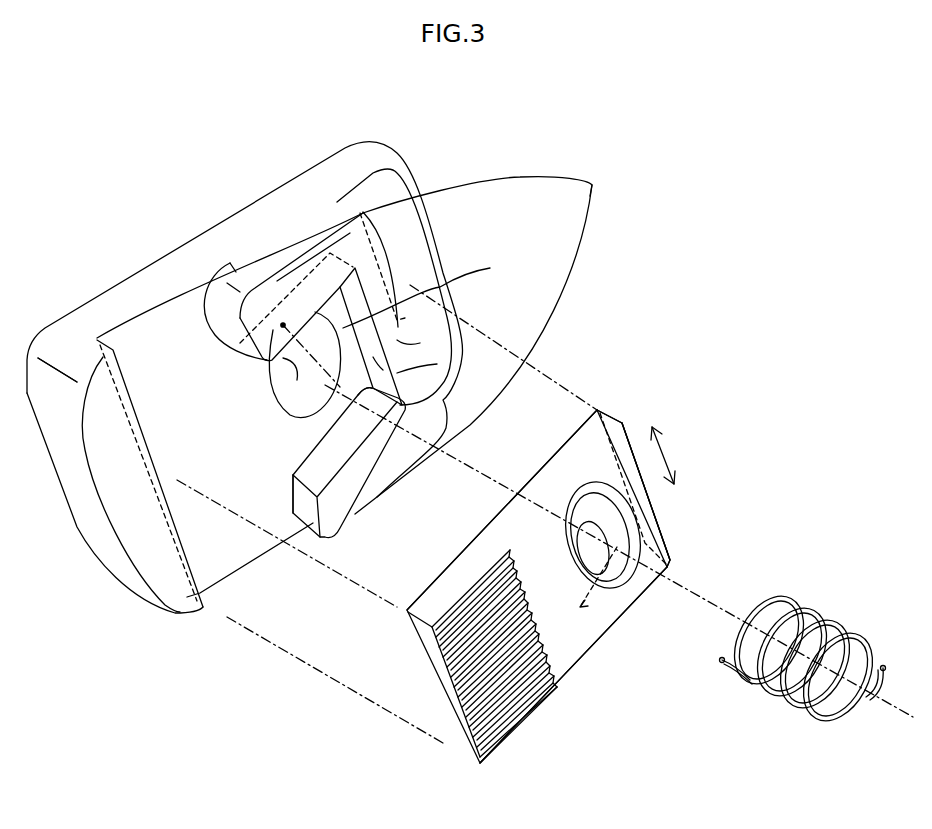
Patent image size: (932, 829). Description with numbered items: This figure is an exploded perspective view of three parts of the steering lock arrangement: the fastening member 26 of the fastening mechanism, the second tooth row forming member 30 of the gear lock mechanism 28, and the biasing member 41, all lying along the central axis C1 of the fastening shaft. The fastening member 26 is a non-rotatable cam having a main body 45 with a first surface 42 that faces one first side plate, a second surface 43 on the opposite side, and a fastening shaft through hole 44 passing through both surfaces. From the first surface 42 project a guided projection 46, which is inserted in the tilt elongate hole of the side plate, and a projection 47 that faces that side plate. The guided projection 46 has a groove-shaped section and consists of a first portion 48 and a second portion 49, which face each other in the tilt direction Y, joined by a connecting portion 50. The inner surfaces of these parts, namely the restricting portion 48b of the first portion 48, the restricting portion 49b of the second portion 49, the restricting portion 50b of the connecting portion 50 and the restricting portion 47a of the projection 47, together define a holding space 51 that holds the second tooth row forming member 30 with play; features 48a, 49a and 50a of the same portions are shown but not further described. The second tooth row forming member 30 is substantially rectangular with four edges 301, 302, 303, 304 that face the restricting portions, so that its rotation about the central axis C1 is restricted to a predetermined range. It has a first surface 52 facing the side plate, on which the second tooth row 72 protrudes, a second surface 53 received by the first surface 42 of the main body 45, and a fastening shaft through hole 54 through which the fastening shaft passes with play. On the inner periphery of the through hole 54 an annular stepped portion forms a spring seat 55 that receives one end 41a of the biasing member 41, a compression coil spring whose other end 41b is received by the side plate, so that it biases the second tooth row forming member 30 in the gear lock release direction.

The fastening member 26 is at (393, 152).
The gear lock mechanism 28 is at (673, 543).
The second tooth row forming member 30 is at (603, 409).
The biasing member 41 is at (826, 619).
The one end of the biasing member 41a is at (722, 663).
The other end of the biasing member 41b is at (884, 668).
The first surface 42 is at (213, 570).
The second surface 43 is at (149, 337).
The fastening shaft through hole 44 is at (287, 397).
The main body 45 is at (233, 540).
The guided projection 46 is at (492, 340).
The projection 47 is at (147, 530).
The restricting portion 47a is at (142, 447).
The first portion 48 is at (303, 230).
The arm projection 48a is at (203, 313).
The restricting portion 48b is at (283, 358).
The second portion 49 is at (350, 507).
The stopper face 49a is at (313, 523).
The restricting portion 49b is at (337, 450).
The connecting portion 50 is at (420, 340).
The arm notch 50a is at (385, 250).
The restricting portion 50b is at (437, 364).
The holding space 51 is at (440, 287).
The first surface 52 is at (563, 640).
The second surface 53 is at (590, 467).
The fastening shaft through hole 54 is at (593, 593).
The spring seat 55 is at (617, 513).
The second tooth row 72 is at (500, 690).
The edge 301 is at (432, 668).
The edge 302 is at (560, 493).
The edge 303 is at (632, 580).
The edge 304 is at (621, 455).
The central axis C1 is at (690, 582).
The tilt direction Y is at (665, 457).